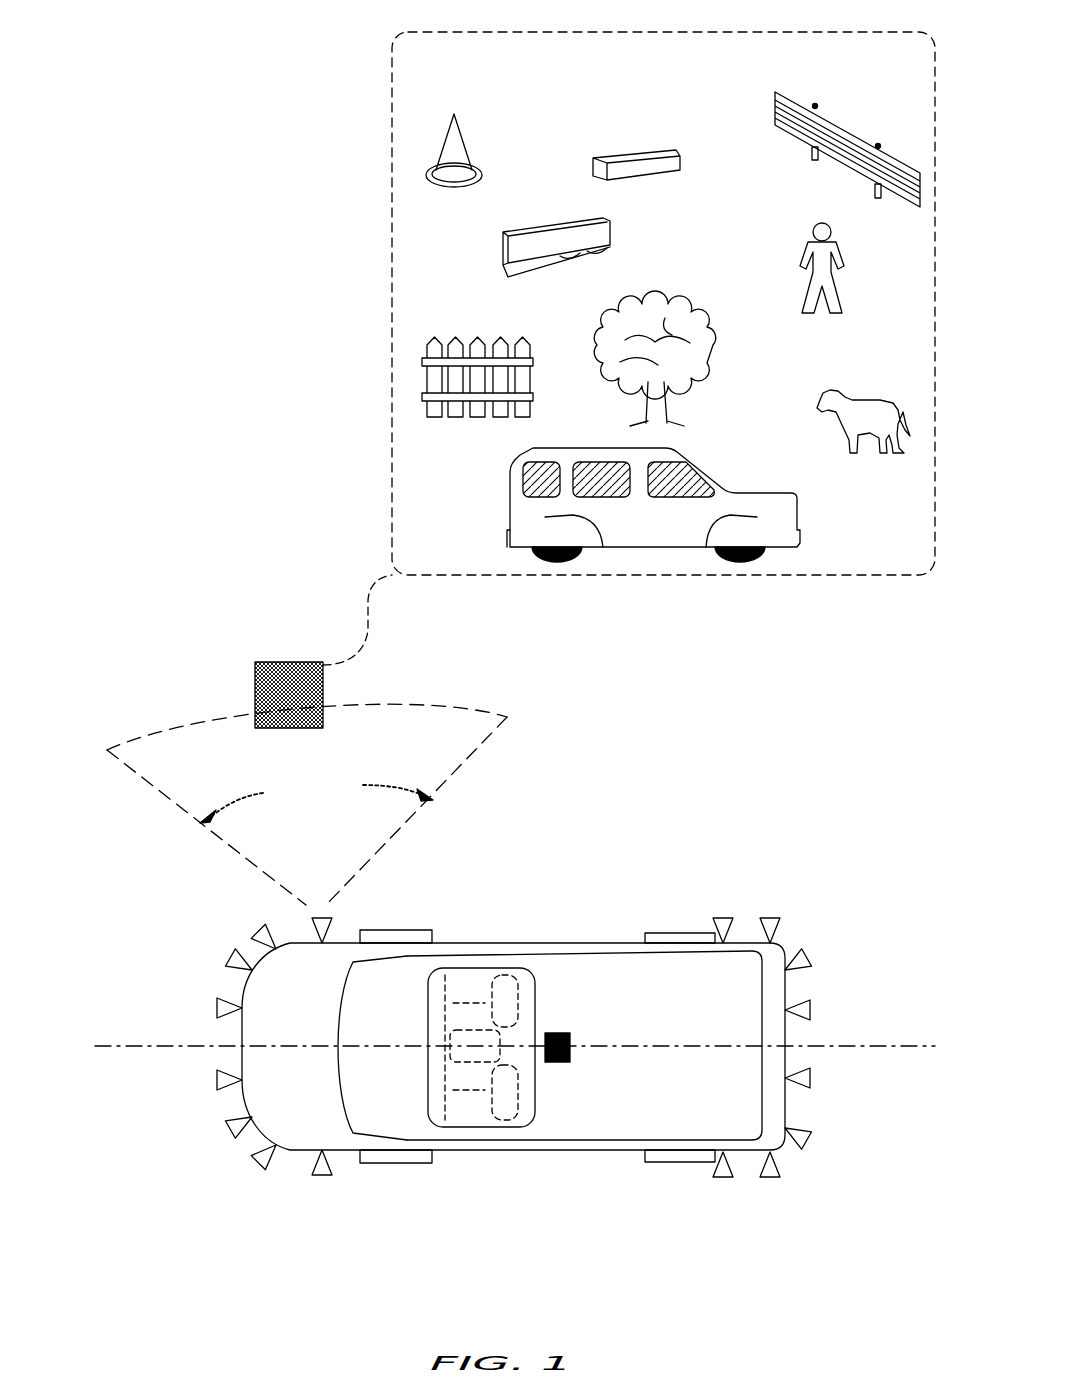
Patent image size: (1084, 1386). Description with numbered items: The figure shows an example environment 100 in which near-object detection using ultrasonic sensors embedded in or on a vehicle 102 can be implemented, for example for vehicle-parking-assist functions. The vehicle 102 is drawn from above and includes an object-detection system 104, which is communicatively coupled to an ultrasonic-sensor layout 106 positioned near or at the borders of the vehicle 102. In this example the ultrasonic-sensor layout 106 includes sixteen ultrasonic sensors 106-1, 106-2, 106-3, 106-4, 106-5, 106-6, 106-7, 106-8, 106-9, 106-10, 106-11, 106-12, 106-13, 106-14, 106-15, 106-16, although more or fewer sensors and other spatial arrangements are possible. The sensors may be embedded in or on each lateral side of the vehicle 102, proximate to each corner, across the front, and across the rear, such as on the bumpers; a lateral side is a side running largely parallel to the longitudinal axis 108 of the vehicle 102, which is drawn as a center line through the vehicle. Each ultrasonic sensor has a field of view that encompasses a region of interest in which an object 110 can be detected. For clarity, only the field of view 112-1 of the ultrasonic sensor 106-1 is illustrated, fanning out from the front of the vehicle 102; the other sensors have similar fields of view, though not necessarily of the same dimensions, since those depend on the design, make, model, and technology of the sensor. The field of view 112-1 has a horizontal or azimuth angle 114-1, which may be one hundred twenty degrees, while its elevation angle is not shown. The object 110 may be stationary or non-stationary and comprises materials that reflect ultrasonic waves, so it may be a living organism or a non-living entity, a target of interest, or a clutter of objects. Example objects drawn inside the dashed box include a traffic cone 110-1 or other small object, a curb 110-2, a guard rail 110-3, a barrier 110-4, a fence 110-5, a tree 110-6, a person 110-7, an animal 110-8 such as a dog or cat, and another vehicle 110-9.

The environment 100 is at (152, 30).
The vehicle 102 is at (500, 940).
The object-detection system 104 is at (560, 1033).
The ultrasonic-sensor layout 106 is at (145, 905).
The ultrasonic sensor 106-1 is at (330, 922).
The ultrasonic sensor 106-2 is at (258, 926).
The ultrasonic sensor 106-3 is at (232, 957).
The ultrasonic sensor 106-4 is at (216, 1006).
The ultrasonic sensor 106-5 is at (216, 1080).
The ultrasonic sensor 106-6 is at (229, 1129).
The ultrasonic sensor 106-7 is at (258, 1164).
The ultrasonic sensor 106-8 is at (325, 1178).
The ultrasonic sensor 106-9 is at (722, 1180).
The ultrasonic sensor 106-10 is at (775, 1180).
The ultrasonic sensor 106-11 is at (812, 1138).
The ultrasonic sensor 106-12 is at (812, 1080).
The ultrasonic sensor 106-13 is at (812, 1010).
The ultrasonic sensor 106-14 is at (812, 958).
The ultrasonic sensor 106-15 is at (773, 916).
The ultrasonic sensor 106-16 is at (721, 916).
The longitudinal axis 108 is at (133, 1045).
The object 110 is at (258, 662).
The traffic cone 110-1 is at (468, 140).
The curb 110-2 is at (605, 178).
The guard rail 110-3 is at (803, 133).
The barrier 110-4 is at (503, 255).
The fence 110-5 is at (483, 337).
The tree 110-6 is at (660, 300).
The person 110-7 is at (817, 313).
The animal 110-8 is at (832, 395).
The another vehicle 110-9 is at (728, 486).
The field of view 112-1 is at (488, 743).
The horizontal angle 114-1 is at (316, 798).